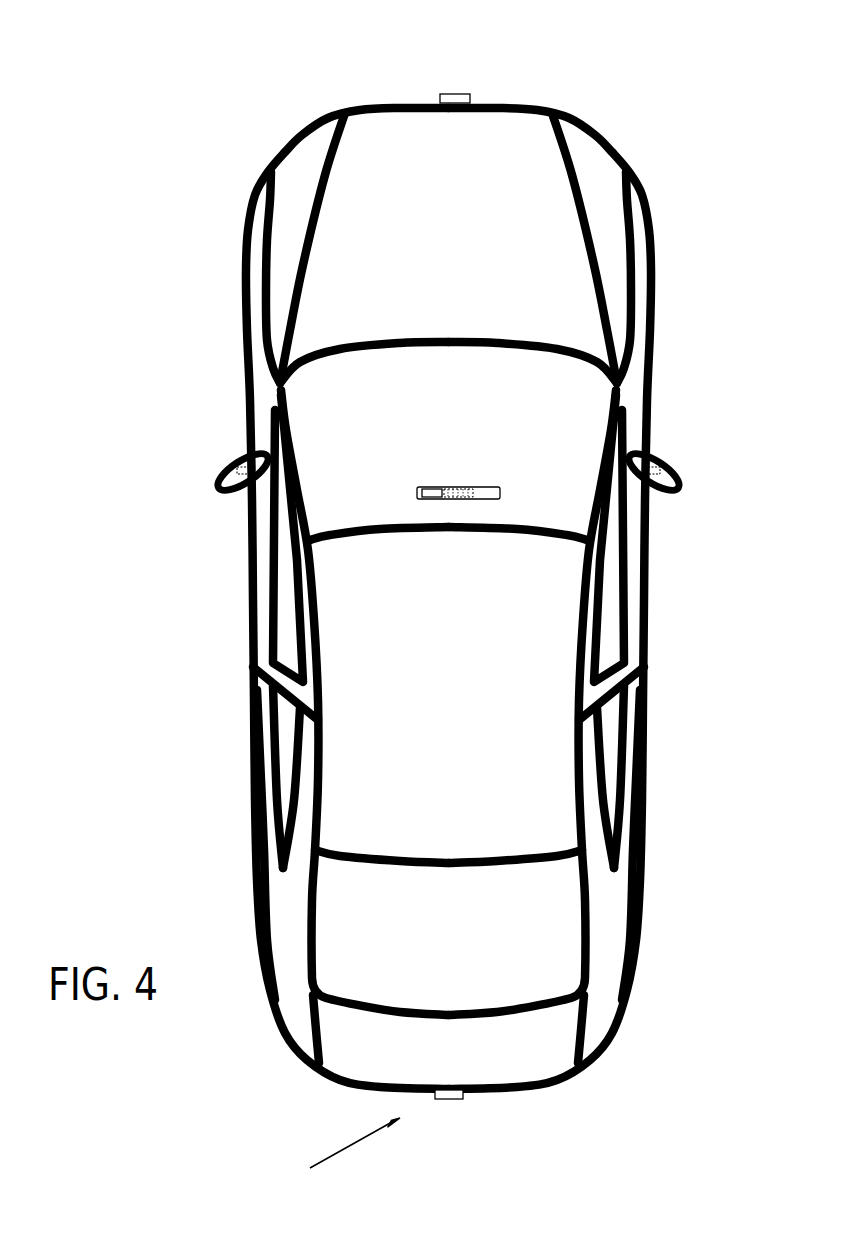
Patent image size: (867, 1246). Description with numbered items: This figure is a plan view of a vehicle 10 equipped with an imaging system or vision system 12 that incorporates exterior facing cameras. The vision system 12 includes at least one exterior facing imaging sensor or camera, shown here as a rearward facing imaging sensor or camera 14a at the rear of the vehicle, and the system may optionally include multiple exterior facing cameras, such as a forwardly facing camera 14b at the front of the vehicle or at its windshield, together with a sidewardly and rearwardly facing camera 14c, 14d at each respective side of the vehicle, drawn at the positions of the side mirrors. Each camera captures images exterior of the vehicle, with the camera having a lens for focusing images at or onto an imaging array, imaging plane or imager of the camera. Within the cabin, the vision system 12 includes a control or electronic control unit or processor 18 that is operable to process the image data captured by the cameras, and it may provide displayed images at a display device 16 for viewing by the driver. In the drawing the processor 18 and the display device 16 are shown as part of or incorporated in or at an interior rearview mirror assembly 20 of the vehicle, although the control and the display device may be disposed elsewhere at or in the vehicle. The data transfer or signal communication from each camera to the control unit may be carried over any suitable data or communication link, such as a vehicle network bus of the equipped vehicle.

The vehicle 10 is at (184, 193).
The vision system 12 is at (337, 1156).
The rearward facing camera 14a is at (462, 1098).
The forwardly facing camera 14b is at (462, 95).
The sidewardly/rearwardly facing camera 14c is at (237, 467).
The sidewardly/rearwardly facing camera 14d is at (660, 467).
The display device 16 is at (433, 489).
The electronic control unit (ECU) or processor 18 is at (457, 488).
The interior rearview mirror assembly 20 is at (500, 488).